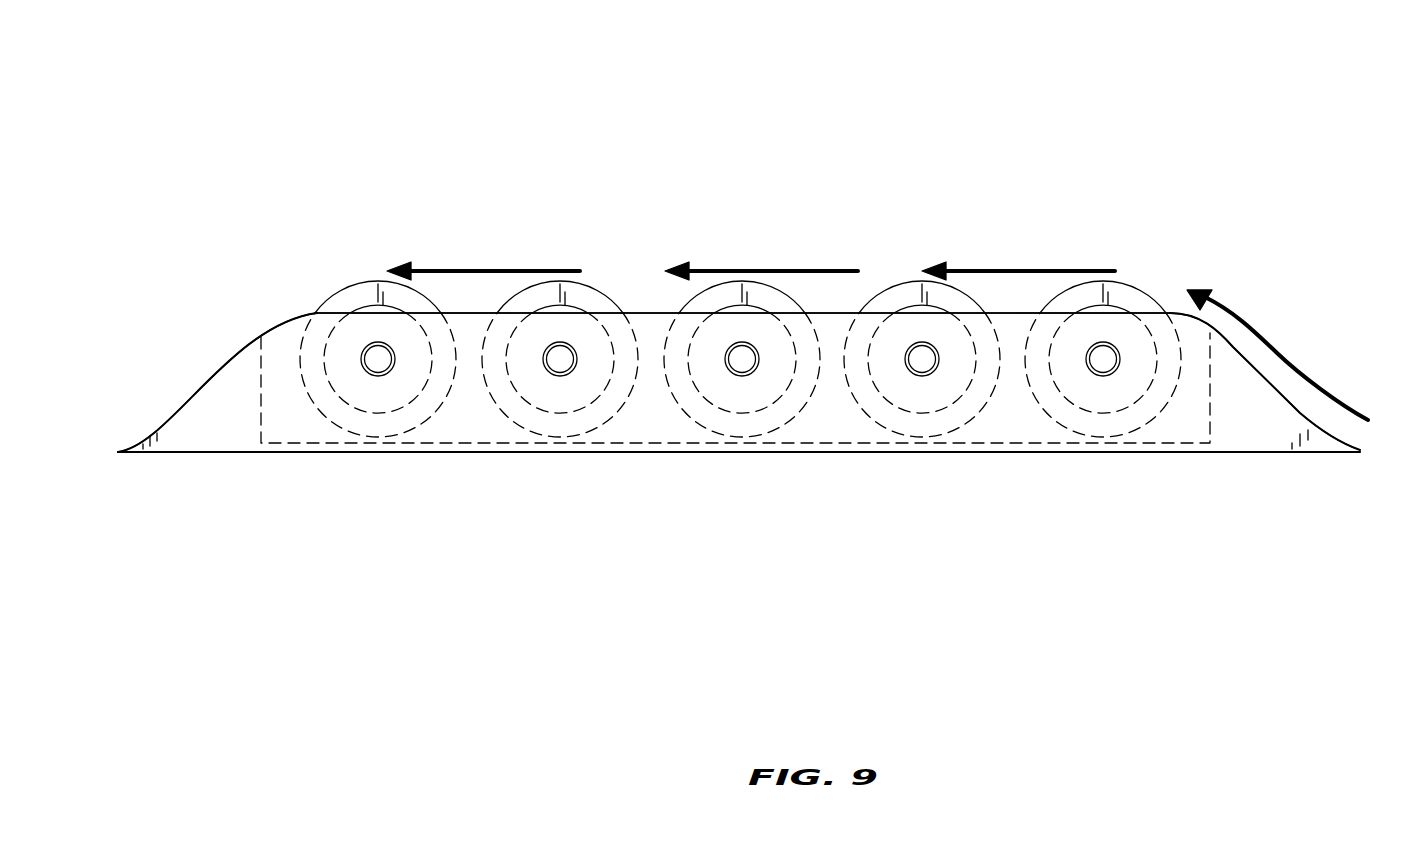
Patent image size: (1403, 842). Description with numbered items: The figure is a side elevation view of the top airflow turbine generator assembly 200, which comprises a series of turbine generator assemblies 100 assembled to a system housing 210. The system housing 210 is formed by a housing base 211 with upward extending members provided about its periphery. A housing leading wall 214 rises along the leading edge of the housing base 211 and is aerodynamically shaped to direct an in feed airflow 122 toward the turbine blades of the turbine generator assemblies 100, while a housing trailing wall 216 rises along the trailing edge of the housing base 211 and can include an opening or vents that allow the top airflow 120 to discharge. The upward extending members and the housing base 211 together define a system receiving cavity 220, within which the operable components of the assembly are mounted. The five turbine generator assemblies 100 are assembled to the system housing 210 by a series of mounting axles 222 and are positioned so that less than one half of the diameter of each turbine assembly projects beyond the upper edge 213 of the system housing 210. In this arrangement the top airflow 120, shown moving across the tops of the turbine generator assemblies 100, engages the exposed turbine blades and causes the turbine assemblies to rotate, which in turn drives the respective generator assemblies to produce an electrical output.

The turbine generator assembly 100 is at (332, 286).
The top airflow 120 is at (735, 268).
The in feed airflow 122 is at (1244, 318).
The top airflow turbine generator assembly 200 is at (329, 144).
The system housing 210 is at (1178, 491).
The housing base 211 is at (697, 454).
The upper edge 213 is at (642, 312).
The housing leading wall 214 is at (1267, 380).
The housing trailing wall 216 is at (213, 383).
The system receiving cavity 220 is at (286, 353).
The mounting axles 222 is at (380, 361).